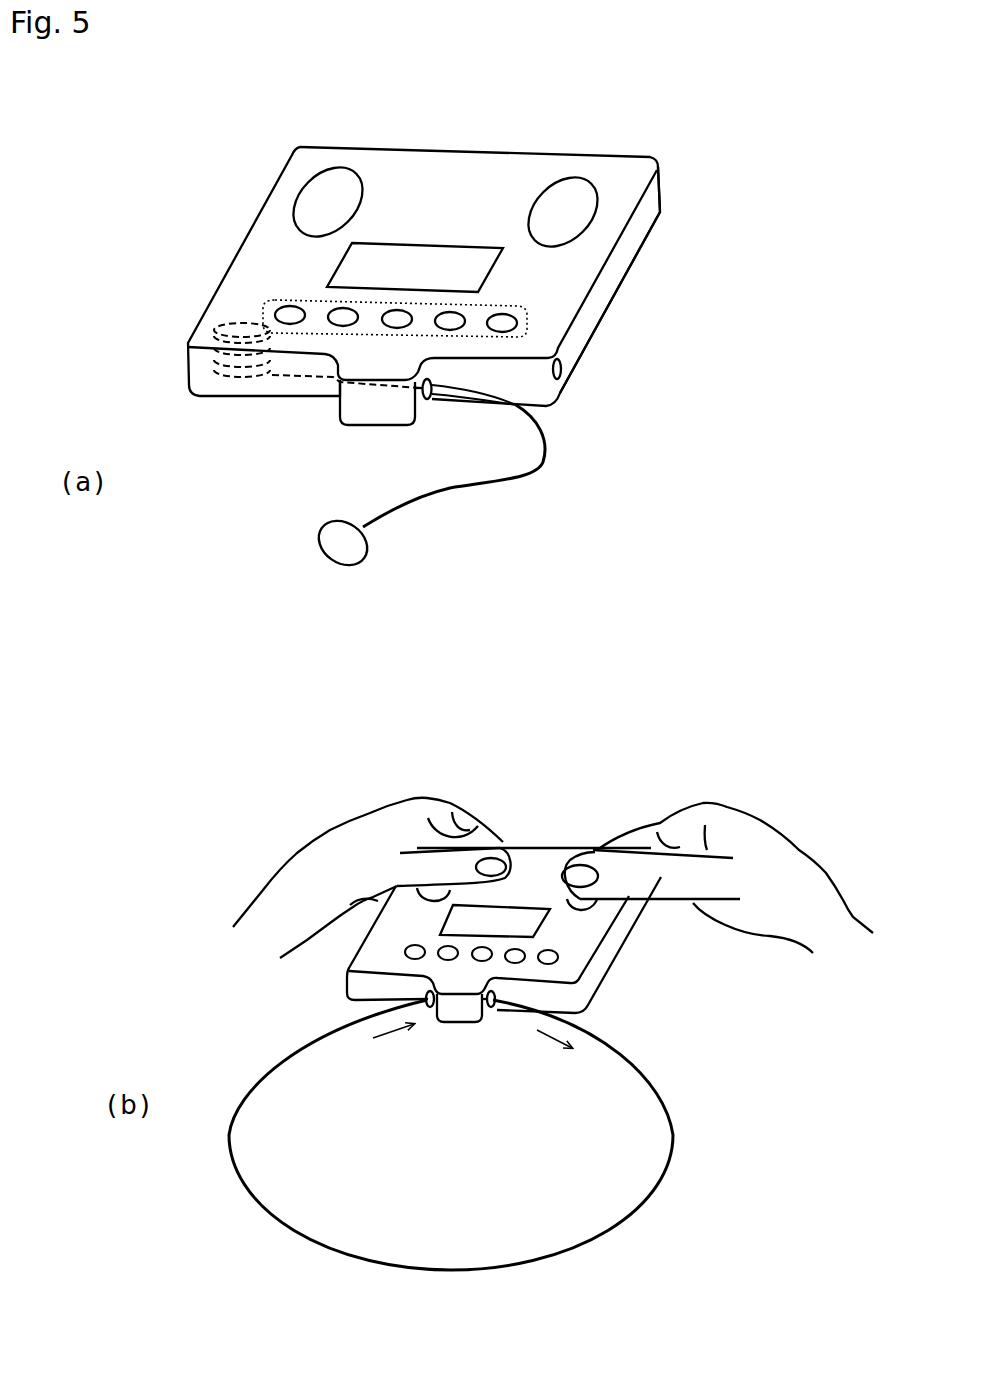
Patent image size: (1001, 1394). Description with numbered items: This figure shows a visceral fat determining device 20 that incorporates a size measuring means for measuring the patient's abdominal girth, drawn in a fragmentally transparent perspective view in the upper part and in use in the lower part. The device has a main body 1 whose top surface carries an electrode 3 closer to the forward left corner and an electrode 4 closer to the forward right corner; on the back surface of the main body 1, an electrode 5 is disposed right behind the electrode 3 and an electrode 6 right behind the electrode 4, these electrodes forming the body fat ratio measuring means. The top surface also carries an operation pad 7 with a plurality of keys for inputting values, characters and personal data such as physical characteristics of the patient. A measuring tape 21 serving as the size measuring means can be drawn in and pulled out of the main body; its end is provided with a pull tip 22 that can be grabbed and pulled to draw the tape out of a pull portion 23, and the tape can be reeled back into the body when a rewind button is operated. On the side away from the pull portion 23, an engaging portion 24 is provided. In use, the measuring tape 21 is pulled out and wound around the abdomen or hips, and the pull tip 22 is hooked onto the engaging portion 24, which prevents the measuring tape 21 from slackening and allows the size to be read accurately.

The main body 1 is at (610, 275).
The electrode 3 is at (334, 186).
The electrode 4 is at (571, 197).
The electrode 5 is at (230, 220).
The electrode 6 is at (658, 240).
The operation pad 7 is at (527, 322).
The visceral fat determining device 20 is at (458, 140).
The measuring tape 21 is at (543, 457).
The pull tip 22 is at (338, 548).
The pull portion 23 is at (432, 395).
The engaging portion 24 is at (338, 383).